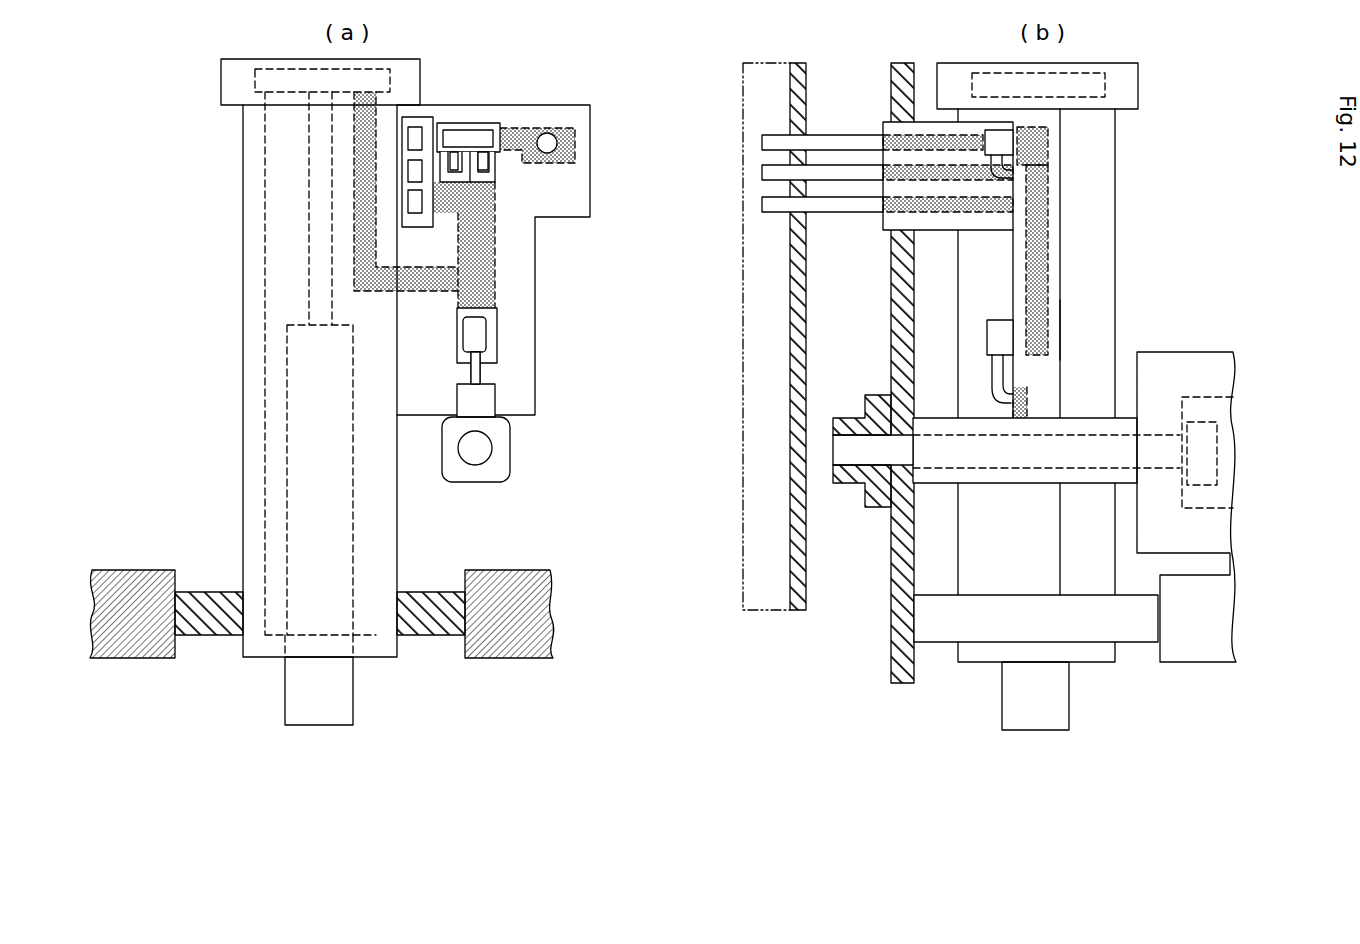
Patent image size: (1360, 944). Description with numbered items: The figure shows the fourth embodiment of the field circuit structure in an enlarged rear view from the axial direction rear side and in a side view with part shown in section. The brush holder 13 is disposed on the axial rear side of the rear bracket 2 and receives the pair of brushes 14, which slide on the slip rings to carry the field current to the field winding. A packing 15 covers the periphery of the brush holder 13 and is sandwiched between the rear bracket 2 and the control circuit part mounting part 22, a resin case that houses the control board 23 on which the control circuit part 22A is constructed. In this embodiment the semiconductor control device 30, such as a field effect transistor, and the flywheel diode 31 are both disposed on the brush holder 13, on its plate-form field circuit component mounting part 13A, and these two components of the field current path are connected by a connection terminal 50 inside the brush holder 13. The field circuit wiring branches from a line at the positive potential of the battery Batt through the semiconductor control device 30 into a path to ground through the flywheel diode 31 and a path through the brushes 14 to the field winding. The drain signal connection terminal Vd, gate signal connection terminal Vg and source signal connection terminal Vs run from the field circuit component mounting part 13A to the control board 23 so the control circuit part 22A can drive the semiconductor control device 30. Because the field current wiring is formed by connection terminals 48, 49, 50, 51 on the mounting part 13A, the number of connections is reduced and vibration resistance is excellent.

In FIG. 12A, the rear bracket 2 is at (130, 570).
In FIG. 12B, the rear bracket 2 is at (1200, 645).
In FIG. 12A, the brush holder 13 is at (242, 300).
In FIG. 12B, the brush holder 13 is at (1115, 200).
In FIG. 12A, the field circuit component mounting part 13A is at (520, 357).
In FIG. 12B, the field circuit component mounting part 13A is at (1060, 318).
In FIG. 12A, the brushes 14 is at (300, 688).
In FIG. 12B, the brushes 14 is at (1015, 673).
In FIG. 12A, the packing 15 is at (193, 637).
In FIG. 12B, the packing 15 is at (1127, 620).
In FIG. 12B, the control circuit part mounting part 22 is at (888, 665).
In FIG. 12B, the control circuit part 22A is at (757, 608).
In FIG. 12B, the control board 23 is at (797, 608).
In FIG. 12A, the semiconductor control device 30 is at (470, 128).
In FIG. 12B, the semiconductor control device 30 is at (997, 135).
In FIG. 12A, the flywheel diode 31 is at (482, 338).
In FIG. 12B, the flywheel diode 31 is at (995, 338).
In FIG. 12A, the connection terminal 48 is at (495, 128).
In FIG. 12B, the connection terminal 48 is at (1040, 152).
In FIG. 12A, the connection terminal 49 is at (355, 235).
In FIG. 12A, the connection terminal 50 is at (482, 287).
In FIG. 12B, the connection terminal 50 is at (1040, 282).
In FIG. 12A, the connection terminal 51 is at (490, 392).
In FIG. 12B, the connection terminal 51 is at (1030, 398).
In FIG. 12A, the drain signal connection terminal Vd is at (407, 137).
In FIG. 12B, the drain signal connection terminal Vd is at (827, 140).
In FIG. 12A, the gate signal connection terminal Vg is at (407, 170).
In FIG. 12B, the gate signal connection terminal Vg is at (842, 172).
In FIG. 12A, the source signal connection terminal Vs is at (407, 202).
In FIG. 12B, the source signal connection terminal Vs is at (832, 212).
In FIG. 12A, the battery Batt is at (555, 133).